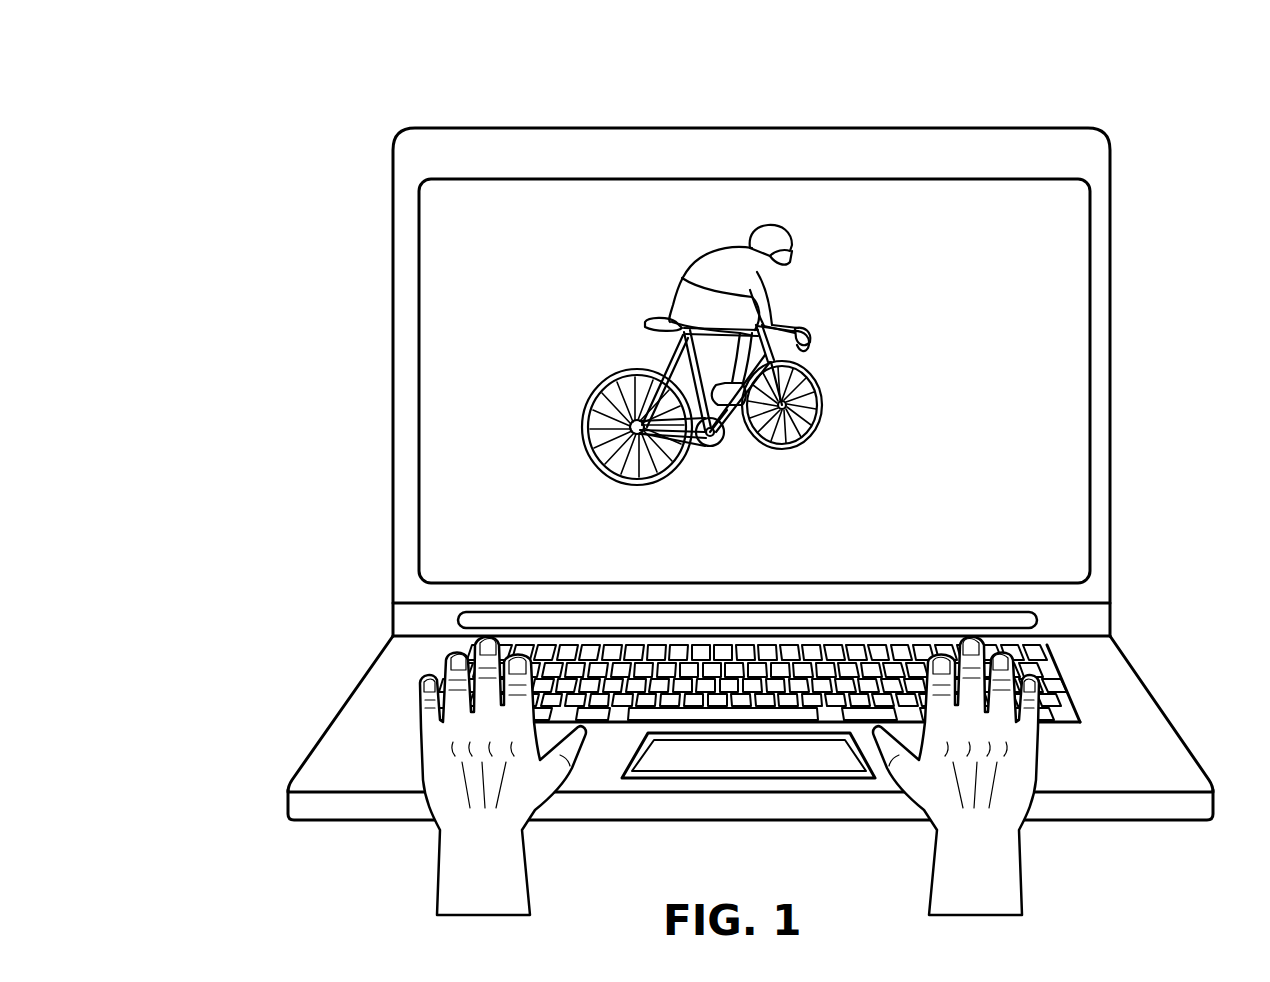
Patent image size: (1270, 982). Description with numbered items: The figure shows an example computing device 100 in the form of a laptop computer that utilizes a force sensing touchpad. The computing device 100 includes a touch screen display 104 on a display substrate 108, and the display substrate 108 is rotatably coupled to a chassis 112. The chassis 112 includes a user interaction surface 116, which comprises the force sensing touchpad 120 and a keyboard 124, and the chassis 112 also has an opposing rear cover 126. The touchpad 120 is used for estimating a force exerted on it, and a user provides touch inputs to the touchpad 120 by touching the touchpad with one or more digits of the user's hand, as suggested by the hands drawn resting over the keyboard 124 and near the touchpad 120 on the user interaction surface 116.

The computing device 100 is at (303, 108).
The touch screen display 104 is at (1022, 266).
The display substrate 108 is at (393, 245).
The chassis 112 is at (1208, 763).
The user interaction surface 116 is at (310, 778).
The force sensing touchpad 120 is at (775, 765).
The keyboard 124 is at (420, 657).
The rear cover 126 is at (1160, 822).